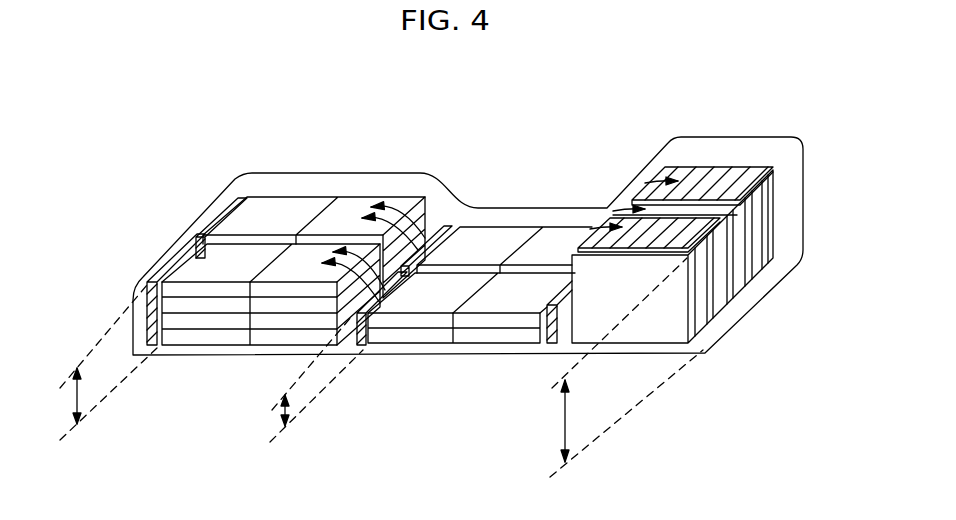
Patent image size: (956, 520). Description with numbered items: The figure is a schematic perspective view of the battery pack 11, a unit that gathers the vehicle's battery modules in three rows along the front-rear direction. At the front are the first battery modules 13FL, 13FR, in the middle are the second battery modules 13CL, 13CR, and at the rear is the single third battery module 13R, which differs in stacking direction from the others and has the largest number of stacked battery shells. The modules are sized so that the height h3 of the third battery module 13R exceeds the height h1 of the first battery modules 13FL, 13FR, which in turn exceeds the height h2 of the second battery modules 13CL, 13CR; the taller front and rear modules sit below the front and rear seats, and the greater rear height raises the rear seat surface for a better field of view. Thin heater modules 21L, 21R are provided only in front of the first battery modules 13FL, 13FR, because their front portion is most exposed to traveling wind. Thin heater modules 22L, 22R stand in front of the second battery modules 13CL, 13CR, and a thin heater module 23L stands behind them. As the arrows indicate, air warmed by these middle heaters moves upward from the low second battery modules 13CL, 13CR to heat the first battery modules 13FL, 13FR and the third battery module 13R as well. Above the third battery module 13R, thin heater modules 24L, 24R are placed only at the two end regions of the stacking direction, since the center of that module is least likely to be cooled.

The battery pack 11 is at (369, 160).
The first battery module 13FL is at (216, 350).
The first battery module 13FR is at (318, 182).
The second battery module 13CL is at (436, 352).
The second battery module 13CR is at (516, 216).
The third battery module 13R is at (656, 344).
The thin heater module 21L is at (177, 258).
The thin heater module 21R is at (222, 210).
The thin heater module 22L is at (354, 332).
The thin heater module 22R is at (402, 266).
The thin heater module 23L is at (555, 345).
The thin heater module 24L is at (688, 233).
The thin heater module 24R is at (722, 176).
The height of the first battery modules h1 is at (99, 362).
The height of the second battery modules h2 is at (299, 379).
The height of the third battery module h3 is at (615, 367).